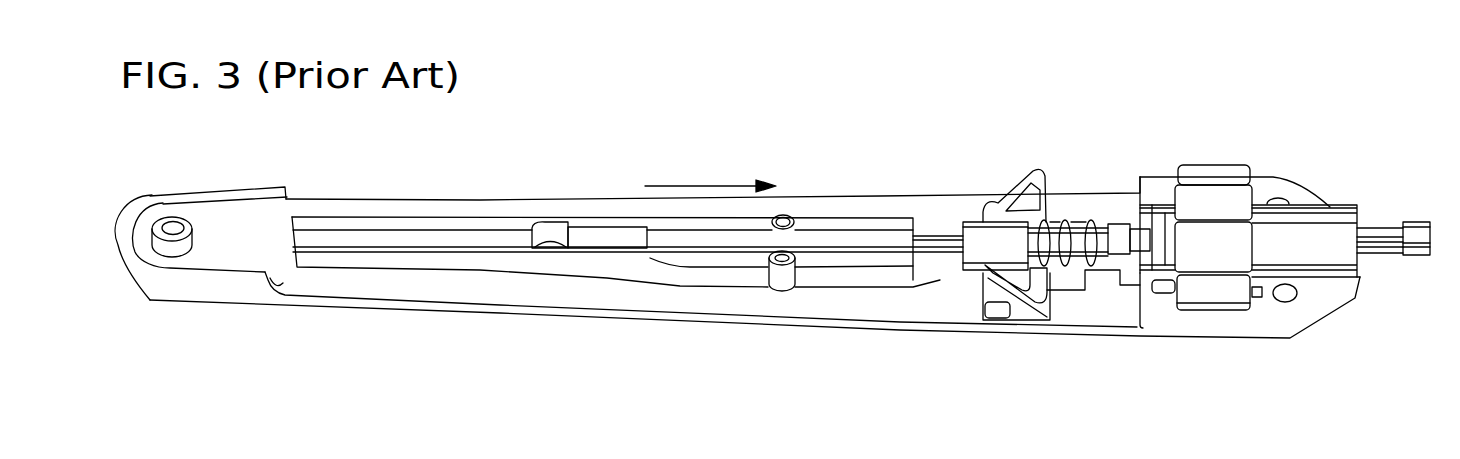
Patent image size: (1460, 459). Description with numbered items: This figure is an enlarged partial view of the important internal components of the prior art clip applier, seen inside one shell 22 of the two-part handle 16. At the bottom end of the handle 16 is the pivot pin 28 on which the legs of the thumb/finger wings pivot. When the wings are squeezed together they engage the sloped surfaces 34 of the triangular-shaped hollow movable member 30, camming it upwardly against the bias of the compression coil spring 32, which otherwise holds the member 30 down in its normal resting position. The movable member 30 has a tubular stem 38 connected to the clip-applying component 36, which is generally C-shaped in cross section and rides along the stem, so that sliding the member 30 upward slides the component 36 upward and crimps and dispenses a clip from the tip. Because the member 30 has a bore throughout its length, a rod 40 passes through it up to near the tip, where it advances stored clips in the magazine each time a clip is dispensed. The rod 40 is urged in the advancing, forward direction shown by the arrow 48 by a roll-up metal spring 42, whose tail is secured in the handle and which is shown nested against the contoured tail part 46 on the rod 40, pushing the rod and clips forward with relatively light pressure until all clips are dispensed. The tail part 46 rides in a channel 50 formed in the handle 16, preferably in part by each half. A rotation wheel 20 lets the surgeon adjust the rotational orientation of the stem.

The handle 16 is at (1278, 155).
The rotation wheel 20 is at (1207, 172).
The shell 22 is at (1308, 302).
The pivot pin 28 is at (172, 218).
The movable member 30 is at (1033, 312).
The compression coil spring 32 is at (1073, 220).
The sloped surfaces 34 is at (1018, 183).
The clip-applying component 36 is at (1417, 227).
The tubular stem 38 is at (1107, 220).
The rod 40 is at (852, 243).
The roll-up metal spring 42 is at (545, 230).
The contoured tail part 46 is at (602, 230).
The arrow 48 is at (700, 182).
The channel 50 is at (422, 232).